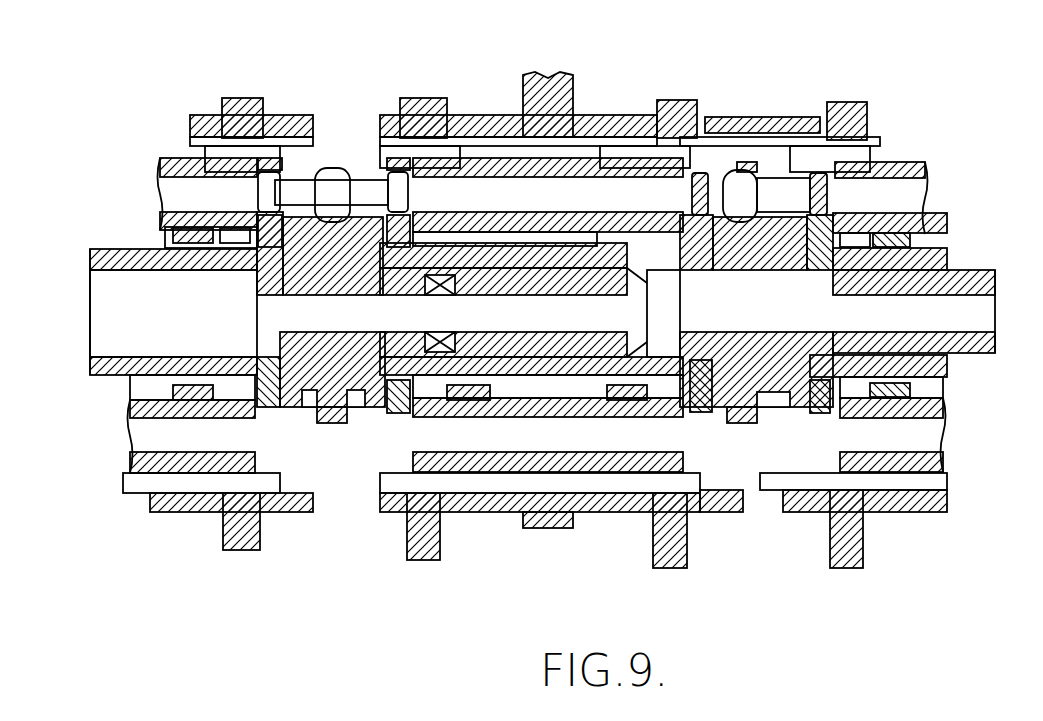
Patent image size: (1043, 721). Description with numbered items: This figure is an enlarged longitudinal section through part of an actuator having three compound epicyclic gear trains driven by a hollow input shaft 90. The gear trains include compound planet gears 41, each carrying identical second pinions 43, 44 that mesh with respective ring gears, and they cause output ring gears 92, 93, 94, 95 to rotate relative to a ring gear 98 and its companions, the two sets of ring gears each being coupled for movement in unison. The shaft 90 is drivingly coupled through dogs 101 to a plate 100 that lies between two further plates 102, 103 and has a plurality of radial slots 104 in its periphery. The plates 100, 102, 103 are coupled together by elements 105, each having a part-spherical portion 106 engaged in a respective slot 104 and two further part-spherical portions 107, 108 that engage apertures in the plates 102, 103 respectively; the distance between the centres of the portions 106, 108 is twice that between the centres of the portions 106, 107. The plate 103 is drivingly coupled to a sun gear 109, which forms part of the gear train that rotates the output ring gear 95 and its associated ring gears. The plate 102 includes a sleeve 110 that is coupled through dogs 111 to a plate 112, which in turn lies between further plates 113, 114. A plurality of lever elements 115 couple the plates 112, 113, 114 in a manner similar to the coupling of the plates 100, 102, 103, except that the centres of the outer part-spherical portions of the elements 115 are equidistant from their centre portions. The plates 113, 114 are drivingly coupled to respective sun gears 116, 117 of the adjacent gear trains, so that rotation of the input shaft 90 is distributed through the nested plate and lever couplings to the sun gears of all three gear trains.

The compound planet gear 41 is at (170, 192).
The second pinion 43 is at (425, 150).
The second pinion 44 is at (240, 100).
The hollow input shaft 90 is at (975, 282).
The output ring gear 92 is at (248, 505).
The output ring gear 93 is at (422, 510).
The output ring gear 94 is at (670, 510).
The output ring gear 95 is at (852, 510).
The ring gear 98 is at (590, 130).
The plate 100 is at (745, 410).
The dogs 101 is at (940, 255).
The plate 102 is at (697, 400).
The plate 103 is at (815, 400).
The radial slots 104 is at (750, 168).
The element 105 is at (775, 195).
The part-spherical portion 106 is at (740, 195).
The part-spherical portion 107 is at (700, 195).
The part-spherical portion 108 is at (845, 195).
The sun gear 109 is at (930, 370).
The sleeve 110 is at (570, 290).
The dogs 111 is at (435, 292).
The plate 112 is at (328, 410).
The plate 113 is at (267, 385).
The plate 114 is at (400, 405).
The lever element 115 is at (342, 190).
The sun gear 116 is at (110, 375).
The sun gear 117 is at (500, 287).